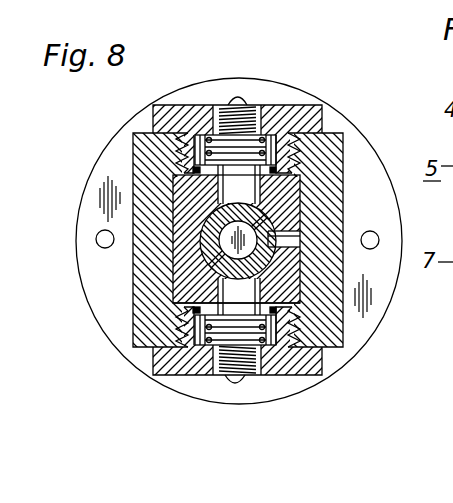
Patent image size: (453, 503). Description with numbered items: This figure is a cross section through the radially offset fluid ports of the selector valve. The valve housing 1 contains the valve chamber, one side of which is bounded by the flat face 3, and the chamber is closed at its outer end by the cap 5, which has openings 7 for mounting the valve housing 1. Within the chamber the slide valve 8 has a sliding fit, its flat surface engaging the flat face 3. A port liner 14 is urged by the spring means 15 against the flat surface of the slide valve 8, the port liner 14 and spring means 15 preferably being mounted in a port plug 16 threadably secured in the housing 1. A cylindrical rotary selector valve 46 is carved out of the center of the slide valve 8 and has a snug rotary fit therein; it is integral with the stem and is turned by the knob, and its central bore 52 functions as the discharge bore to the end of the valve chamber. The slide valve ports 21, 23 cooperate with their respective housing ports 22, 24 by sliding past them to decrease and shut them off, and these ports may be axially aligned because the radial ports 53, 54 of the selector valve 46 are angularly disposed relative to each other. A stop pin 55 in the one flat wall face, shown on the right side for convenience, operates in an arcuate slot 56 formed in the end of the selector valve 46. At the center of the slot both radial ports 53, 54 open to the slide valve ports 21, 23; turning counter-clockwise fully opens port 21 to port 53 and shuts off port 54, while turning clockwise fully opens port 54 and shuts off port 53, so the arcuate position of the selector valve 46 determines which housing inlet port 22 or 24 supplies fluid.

The valve housing 1 is at (143, 328).
The flat face 3 is at (300, 306).
The cap 5 is at (87, 180).
The openings 7 is at (96, 238).
The slide valve 8 is at (192, 288).
The port liner 14 is at (285, 170).
The spring means 15 is at (198, 165).
The port plug 16 is at (323, 122).
The slide valve port 21 is at (255, 150).
The housing port 22 is at (241, 185).
The slide valve port 23 is at (243, 288).
The housing port 24 is at (231, 378).
The rotary selector valve 46 is at (213, 213).
The central bore 52 is at (198, 252).
The radial port 53 is at (268, 212).
The radial port 54 is at (272, 302).
The stop pin 55 is at (402, 250).
The arcuate slot 56 is at (300, 236).